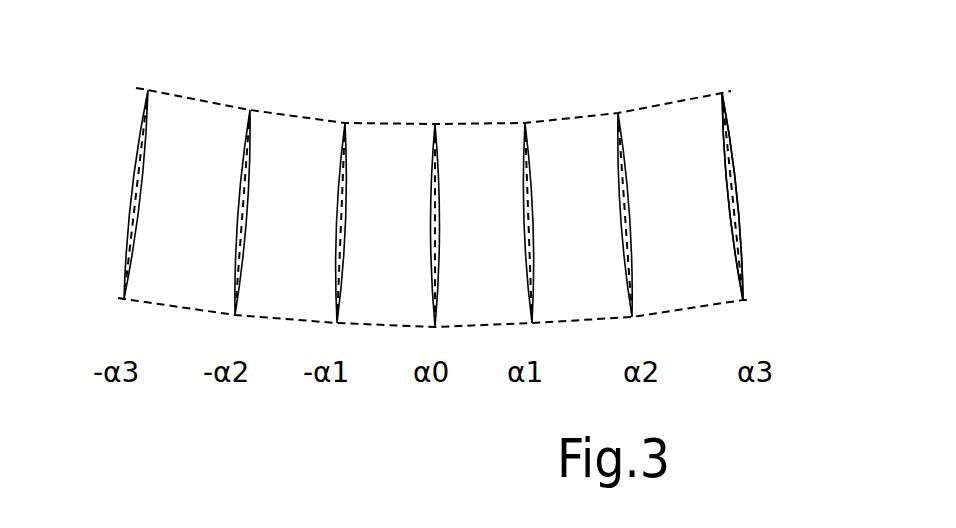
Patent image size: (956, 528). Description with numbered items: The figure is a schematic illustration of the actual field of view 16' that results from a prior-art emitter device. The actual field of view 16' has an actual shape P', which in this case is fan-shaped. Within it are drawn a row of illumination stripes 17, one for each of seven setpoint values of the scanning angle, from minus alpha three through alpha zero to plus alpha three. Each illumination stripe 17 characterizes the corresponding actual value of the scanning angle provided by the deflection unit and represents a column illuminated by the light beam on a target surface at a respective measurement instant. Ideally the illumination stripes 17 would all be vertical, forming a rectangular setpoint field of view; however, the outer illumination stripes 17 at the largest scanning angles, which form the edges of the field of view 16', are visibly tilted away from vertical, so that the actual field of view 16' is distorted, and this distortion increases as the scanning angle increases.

The actual field of view 16' is at (433, 176).
The illumination stripe 17 is at (735, 177).
The actual shape P' is at (511, 97).